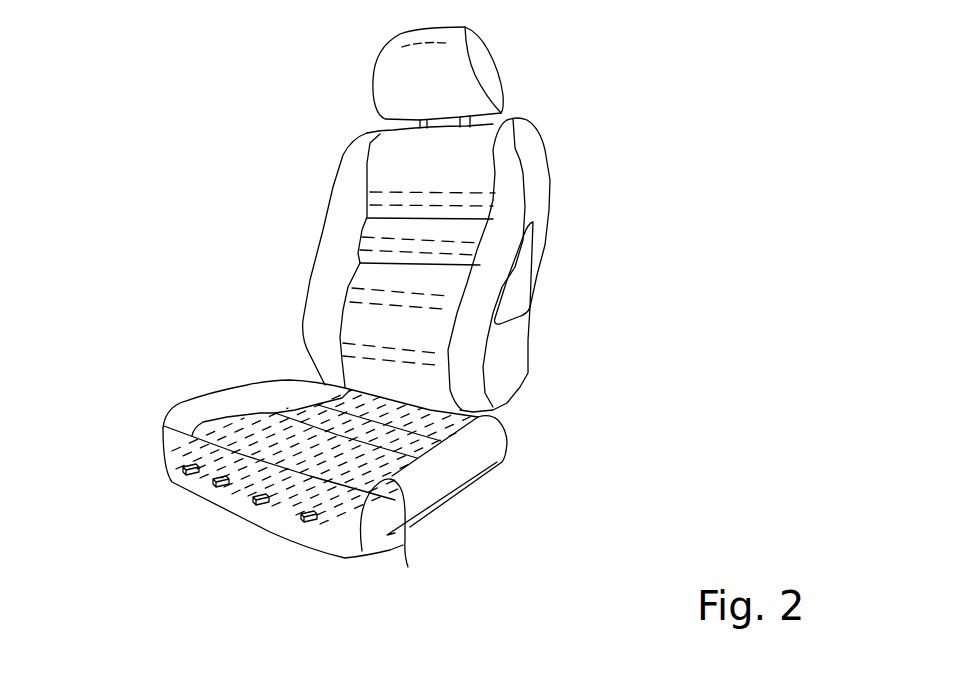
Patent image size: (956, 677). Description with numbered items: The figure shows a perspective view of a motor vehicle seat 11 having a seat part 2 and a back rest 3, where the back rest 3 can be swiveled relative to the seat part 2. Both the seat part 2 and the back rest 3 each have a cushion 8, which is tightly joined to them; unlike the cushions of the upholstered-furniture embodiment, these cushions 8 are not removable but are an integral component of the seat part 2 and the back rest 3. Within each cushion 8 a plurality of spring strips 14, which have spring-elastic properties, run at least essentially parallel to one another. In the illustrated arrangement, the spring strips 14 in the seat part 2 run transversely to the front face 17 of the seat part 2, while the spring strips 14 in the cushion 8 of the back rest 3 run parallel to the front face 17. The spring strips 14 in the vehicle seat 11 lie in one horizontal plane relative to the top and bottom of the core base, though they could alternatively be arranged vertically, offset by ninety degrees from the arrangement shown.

The seat part 2 is at (208, 364).
The back rest 3 is at (289, 193).
The cushion 8 is at (462, 333).
The motor vehicle seat 11 is at (581, 237).
The spring strips 14 is at (470, 200).
The front face 17 is at (237, 492).